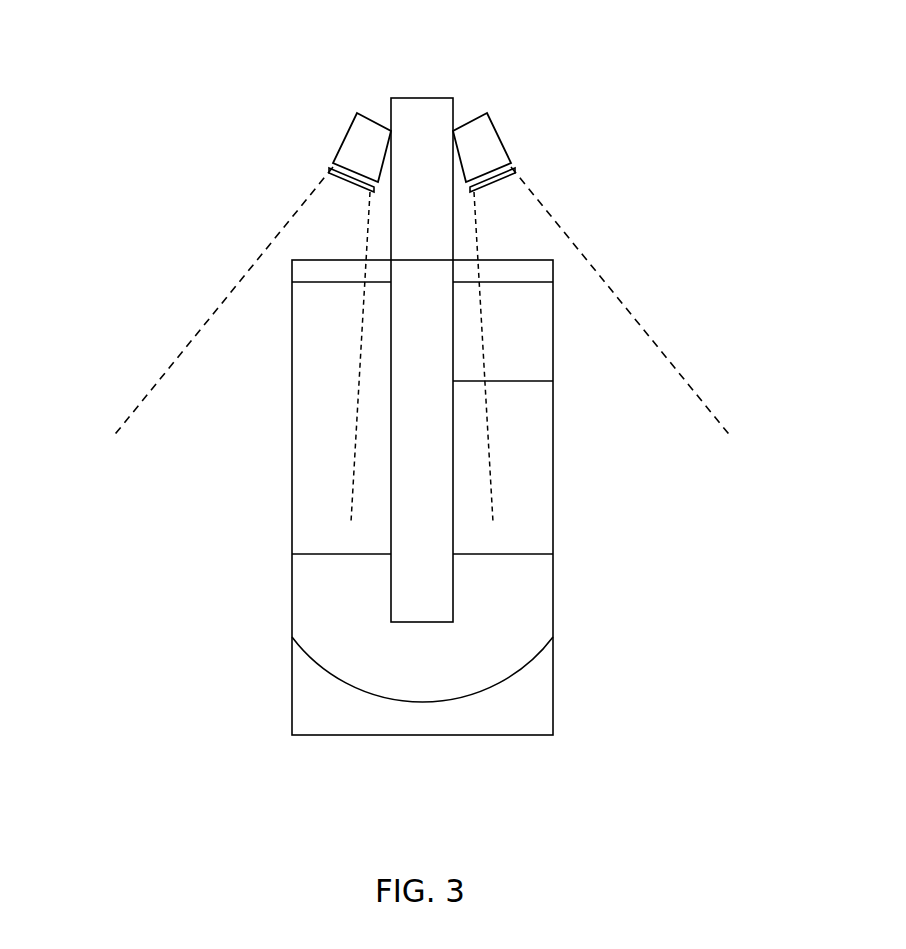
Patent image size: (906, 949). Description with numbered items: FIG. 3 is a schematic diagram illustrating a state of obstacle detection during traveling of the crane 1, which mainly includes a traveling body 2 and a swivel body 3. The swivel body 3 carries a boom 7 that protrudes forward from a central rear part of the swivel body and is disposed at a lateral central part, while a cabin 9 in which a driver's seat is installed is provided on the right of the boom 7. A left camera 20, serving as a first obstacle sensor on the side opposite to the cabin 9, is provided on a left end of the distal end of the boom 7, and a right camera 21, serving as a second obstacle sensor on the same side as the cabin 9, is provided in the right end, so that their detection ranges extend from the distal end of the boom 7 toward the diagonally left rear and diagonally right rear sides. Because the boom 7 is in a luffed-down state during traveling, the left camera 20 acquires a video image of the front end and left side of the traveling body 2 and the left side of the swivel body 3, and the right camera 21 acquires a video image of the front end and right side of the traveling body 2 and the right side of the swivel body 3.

The crane 1 is at (132, 138).
The traveling body 2 is at (309, 223).
The swivel body 3 is at (270, 534).
The boom 7 is at (428, 108).
The cabin 9 is at (538, 532).
The left camera 20 is at (347, 135).
The right camera 21 is at (492, 135).